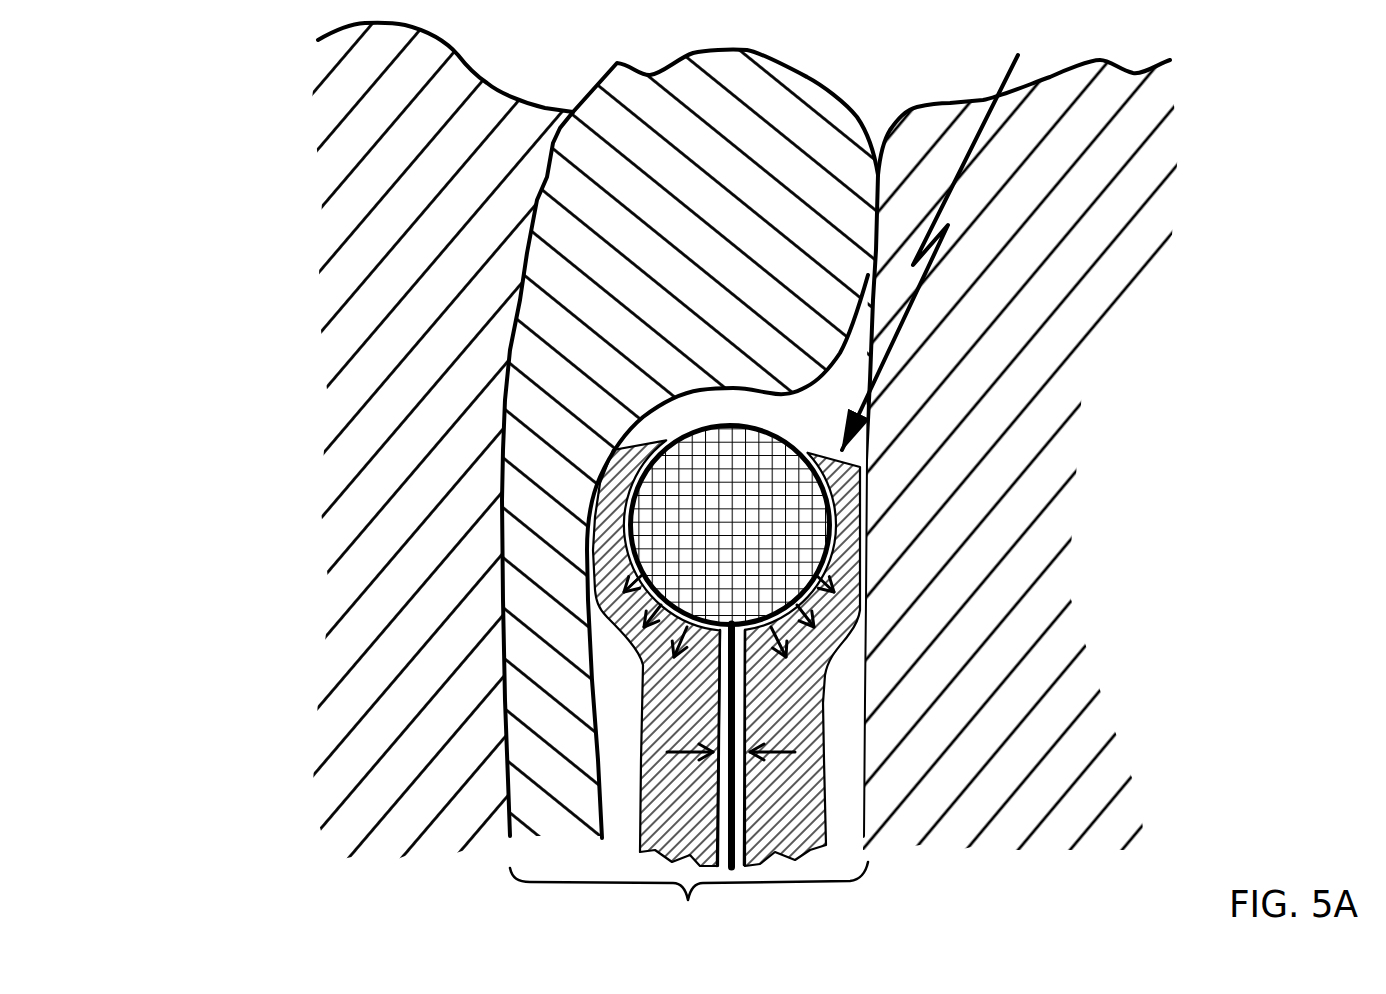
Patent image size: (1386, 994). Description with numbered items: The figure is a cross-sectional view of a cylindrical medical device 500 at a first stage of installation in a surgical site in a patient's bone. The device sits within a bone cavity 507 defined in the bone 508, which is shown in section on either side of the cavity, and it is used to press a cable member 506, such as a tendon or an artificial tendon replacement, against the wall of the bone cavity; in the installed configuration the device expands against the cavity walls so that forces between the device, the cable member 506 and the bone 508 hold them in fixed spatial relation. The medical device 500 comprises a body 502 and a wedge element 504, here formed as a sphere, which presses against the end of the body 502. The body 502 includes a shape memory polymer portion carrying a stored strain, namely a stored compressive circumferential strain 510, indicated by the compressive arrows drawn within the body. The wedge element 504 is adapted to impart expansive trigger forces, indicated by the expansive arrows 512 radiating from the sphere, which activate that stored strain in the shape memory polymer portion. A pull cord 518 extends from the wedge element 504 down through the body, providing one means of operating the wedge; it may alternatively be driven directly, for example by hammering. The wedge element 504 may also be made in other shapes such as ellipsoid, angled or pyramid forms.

The medical device 500 is at (942, 233).
The body 502 is at (797, 703).
The wedge element 504 is at (797, 538).
The cable member 506 is at (537, 608).
The bone cavity 507 is at (689, 902).
The bone 508 is at (385, 158).
The stored compressive circumferential strain 510 is at (667, 752).
The expansive arrows 512 is at (640, 590).
The pull cord 518 is at (733, 810).